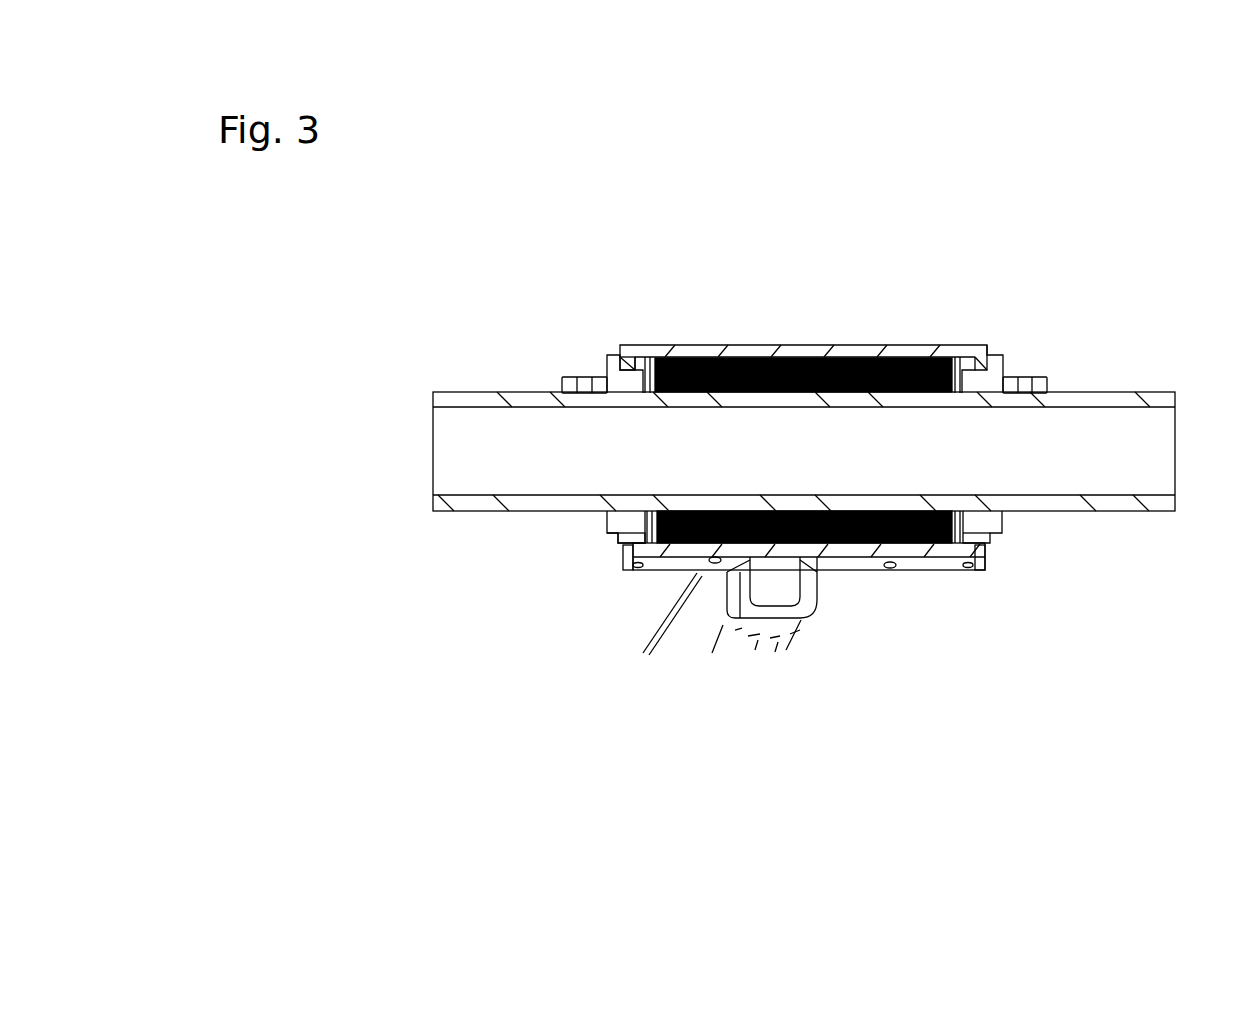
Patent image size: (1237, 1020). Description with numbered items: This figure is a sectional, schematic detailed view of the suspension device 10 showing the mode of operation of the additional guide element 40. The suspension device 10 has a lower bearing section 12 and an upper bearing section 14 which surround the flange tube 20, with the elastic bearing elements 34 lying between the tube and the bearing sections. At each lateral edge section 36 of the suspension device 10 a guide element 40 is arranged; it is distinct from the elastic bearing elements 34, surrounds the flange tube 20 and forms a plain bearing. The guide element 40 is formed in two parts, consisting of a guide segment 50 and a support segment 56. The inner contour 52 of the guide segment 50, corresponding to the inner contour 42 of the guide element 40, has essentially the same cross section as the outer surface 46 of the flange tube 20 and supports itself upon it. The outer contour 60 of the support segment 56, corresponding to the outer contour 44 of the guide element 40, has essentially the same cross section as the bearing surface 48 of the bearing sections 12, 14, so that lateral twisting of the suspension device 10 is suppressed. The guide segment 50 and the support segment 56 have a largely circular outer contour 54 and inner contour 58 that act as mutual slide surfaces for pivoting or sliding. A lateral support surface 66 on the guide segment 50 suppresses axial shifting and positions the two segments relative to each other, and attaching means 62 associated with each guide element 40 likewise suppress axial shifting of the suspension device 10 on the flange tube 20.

The suspension device 10 is at (804, 200).
The lower bearing section 12 is at (884, 572).
The upper bearing section 14 is at (961, 345).
The flange tube 20 is at (777, 363).
The outer surface 46 is at (448, 388).
The elastic bearing elements 34 is at (863, 357).
The edge section 36 is at (1040, 266).
The guide element 40 is at (819, 373).
The inner contour 42 is at (515, 560).
The inner contour of the guide segment 52 is at (604, 515).
The outer contour 44 is at (795, 670).
The bearing surface 48 is at (795, 670).
The outer contour of the support segment 60 is at (639, 553).
The guide segment 50 is at (596, 538).
The outer contour of the guide segment 54 is at (555, 617).
The inner contour of the support segment 58 is at (625, 540).
The support segment 56 is at (616, 566).
The attaching means 62 is at (569, 377).
The lateral support surface 66 is at (625, 345).